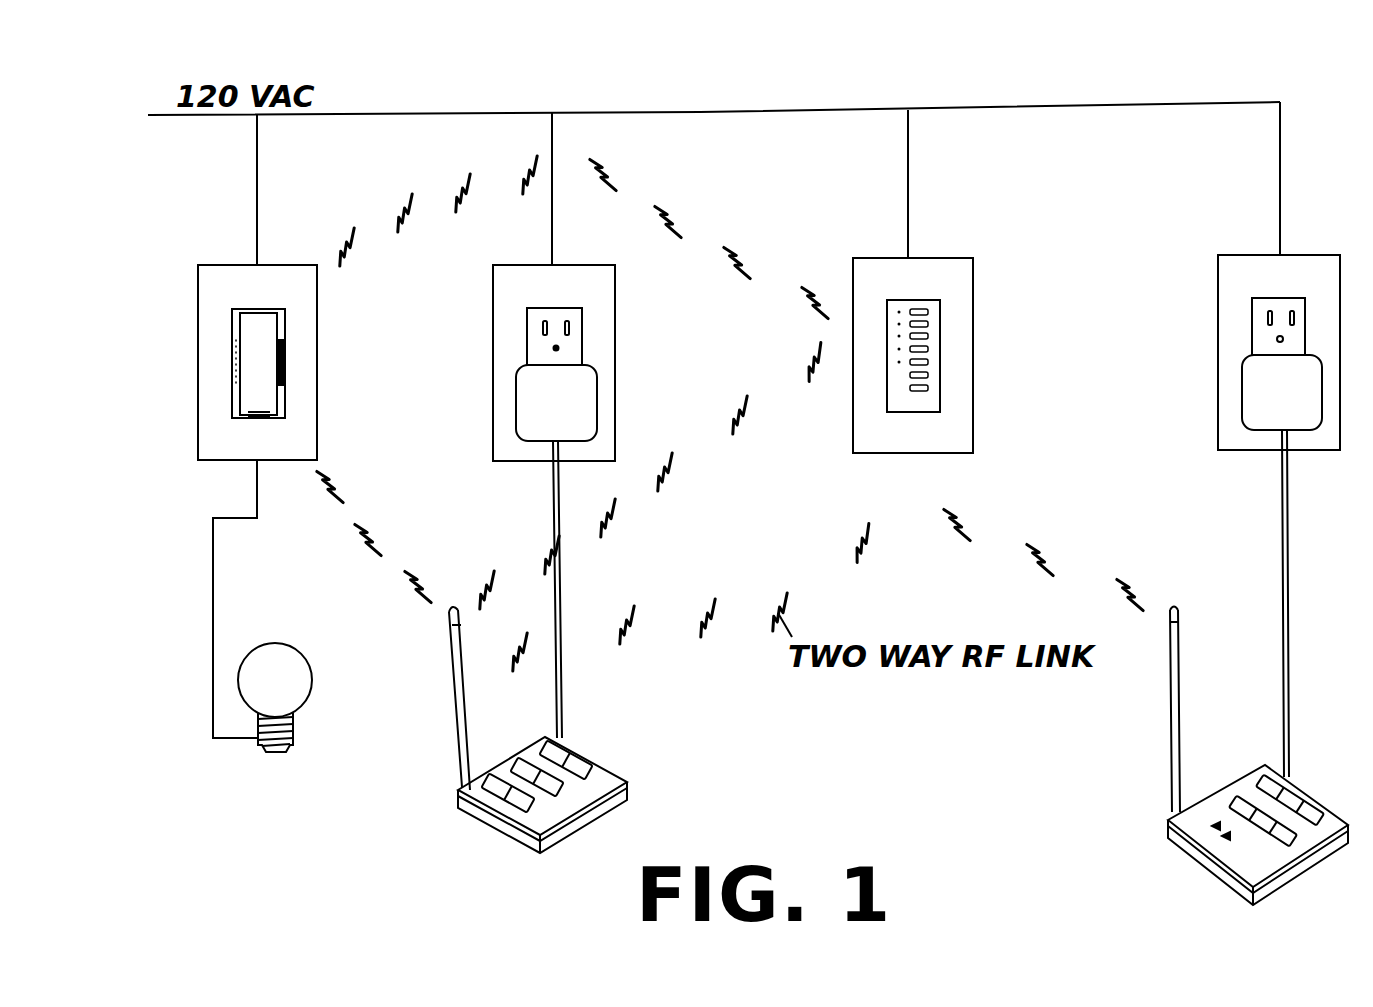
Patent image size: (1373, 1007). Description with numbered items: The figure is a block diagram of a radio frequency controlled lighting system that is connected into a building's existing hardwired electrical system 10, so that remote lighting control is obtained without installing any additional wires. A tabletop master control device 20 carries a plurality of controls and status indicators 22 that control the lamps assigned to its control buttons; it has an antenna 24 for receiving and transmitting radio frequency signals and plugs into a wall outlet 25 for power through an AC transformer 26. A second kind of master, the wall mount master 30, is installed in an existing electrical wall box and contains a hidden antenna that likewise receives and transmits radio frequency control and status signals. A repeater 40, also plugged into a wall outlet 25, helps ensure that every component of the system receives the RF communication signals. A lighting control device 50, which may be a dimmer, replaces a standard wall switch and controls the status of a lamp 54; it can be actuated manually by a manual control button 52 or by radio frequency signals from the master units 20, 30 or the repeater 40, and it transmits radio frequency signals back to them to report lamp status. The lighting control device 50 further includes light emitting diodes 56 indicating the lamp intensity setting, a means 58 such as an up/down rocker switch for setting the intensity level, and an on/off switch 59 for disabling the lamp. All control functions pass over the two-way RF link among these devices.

The hardwired electrical system 10 is at (668, 112).
The master control device 20 is at (1231, 667).
The controls and status indicators 22 is at (1295, 803).
The antenna 24 is at (1177, 609).
The wall outlet 25 is at (608, 376).
The AC transformer 26 is at (1252, 423).
The wall mount master 30 is at (965, 329).
The repeater 40 is at (603, 762).
The lighting control device 50 is at (263, 388).
The manual control button 52 is at (263, 343).
The lamp 54 is at (296, 690).
The light emitting diodes 56 is at (235, 347).
The means for setting the intensity level 58 is at (283, 373).
The on/off switch 59 is at (262, 418).